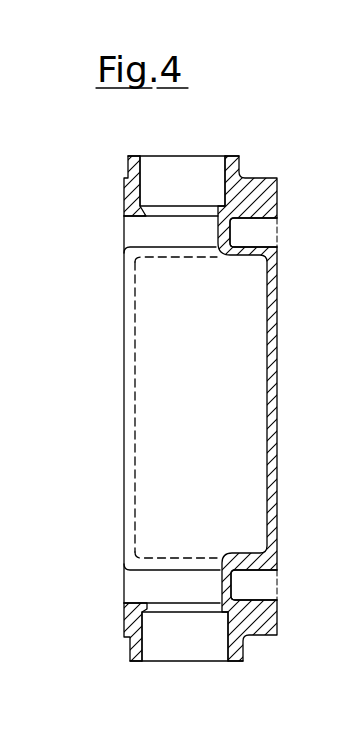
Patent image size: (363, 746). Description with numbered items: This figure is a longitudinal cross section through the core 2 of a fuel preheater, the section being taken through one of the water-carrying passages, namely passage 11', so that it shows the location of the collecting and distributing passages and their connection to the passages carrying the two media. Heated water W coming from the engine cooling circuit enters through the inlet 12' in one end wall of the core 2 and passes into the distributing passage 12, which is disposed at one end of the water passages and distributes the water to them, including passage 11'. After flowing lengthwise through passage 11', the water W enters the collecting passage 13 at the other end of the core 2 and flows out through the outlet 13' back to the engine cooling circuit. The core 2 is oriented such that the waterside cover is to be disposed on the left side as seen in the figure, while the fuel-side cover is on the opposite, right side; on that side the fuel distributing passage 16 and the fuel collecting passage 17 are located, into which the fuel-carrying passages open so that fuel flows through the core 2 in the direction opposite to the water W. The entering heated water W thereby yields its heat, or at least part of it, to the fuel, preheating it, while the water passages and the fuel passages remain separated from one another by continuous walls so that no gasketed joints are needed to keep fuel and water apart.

The core 2 is at (254, 156).
The distributing passage 12 is at (150, 230).
The inlet 12' is at (187, 160).
The collecting passage 17 is at (262, 233).
The distributing passage 16 is at (255, 583).
The collecting passage 13 is at (152, 603).
The outlet 13' is at (191, 666).
The passage 11' is at (176, 408).
The water W is at (163, 176).